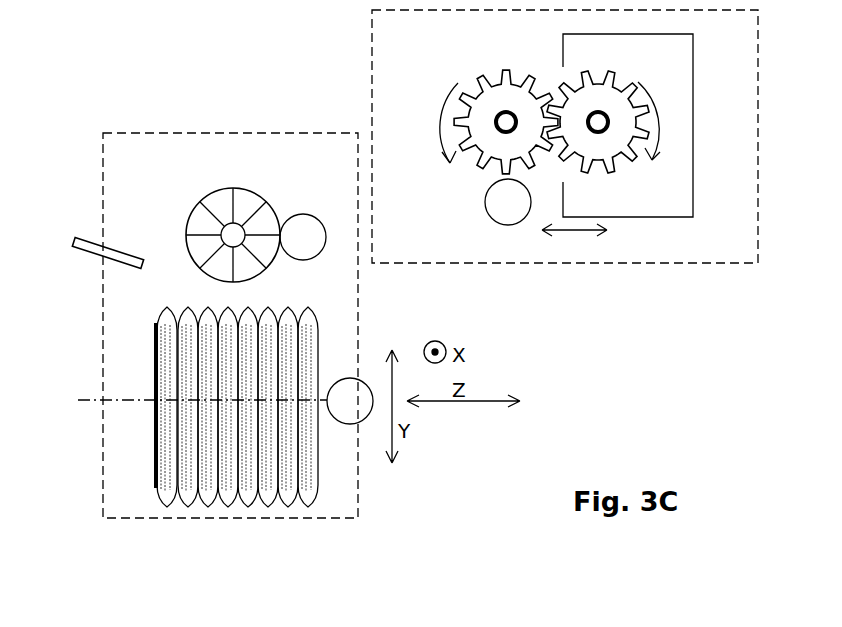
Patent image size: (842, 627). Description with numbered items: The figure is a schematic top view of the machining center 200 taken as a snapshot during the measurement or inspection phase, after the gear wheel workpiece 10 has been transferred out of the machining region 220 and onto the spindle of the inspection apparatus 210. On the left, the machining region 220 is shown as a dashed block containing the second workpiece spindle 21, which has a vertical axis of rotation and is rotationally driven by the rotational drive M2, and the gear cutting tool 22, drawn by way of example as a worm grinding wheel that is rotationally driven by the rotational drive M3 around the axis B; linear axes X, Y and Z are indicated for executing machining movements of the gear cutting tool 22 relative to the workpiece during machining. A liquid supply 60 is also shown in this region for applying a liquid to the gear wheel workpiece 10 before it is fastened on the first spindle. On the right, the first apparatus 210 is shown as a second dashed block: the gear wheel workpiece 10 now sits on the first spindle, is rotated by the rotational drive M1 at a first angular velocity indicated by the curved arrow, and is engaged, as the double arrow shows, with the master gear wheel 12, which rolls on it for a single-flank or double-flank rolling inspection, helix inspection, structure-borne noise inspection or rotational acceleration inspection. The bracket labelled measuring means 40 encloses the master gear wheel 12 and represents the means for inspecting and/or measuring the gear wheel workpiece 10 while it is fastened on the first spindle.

The machining center 200 is at (118, 43).
The first apparatus 210 is at (742, 253).
The machining region 220 is at (347, 173).
The measuring means 40 is at (680, 65).
The gear wheel workpiece 10 is at (513, 72).
The master gear wheel 12 is at (647, 127).
The second workpiece spindle 21 is at (215, 192).
The gear cutting tool 22 is at (312, 448).
The liquid supply 60 is at (118, 258).
The rotational drive M1 is at (508, 202).
The rotational drive M2 is at (303, 237).
The rotational drive M3 is at (350, 401).